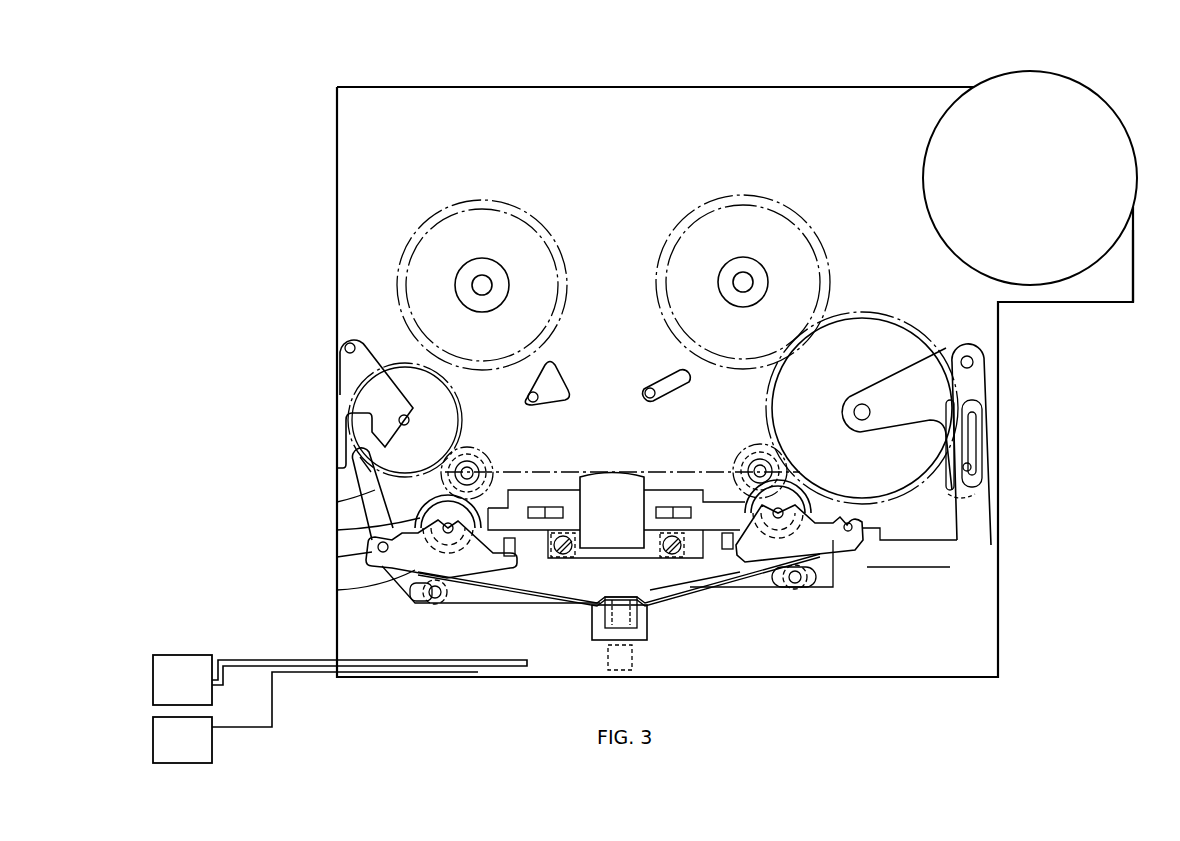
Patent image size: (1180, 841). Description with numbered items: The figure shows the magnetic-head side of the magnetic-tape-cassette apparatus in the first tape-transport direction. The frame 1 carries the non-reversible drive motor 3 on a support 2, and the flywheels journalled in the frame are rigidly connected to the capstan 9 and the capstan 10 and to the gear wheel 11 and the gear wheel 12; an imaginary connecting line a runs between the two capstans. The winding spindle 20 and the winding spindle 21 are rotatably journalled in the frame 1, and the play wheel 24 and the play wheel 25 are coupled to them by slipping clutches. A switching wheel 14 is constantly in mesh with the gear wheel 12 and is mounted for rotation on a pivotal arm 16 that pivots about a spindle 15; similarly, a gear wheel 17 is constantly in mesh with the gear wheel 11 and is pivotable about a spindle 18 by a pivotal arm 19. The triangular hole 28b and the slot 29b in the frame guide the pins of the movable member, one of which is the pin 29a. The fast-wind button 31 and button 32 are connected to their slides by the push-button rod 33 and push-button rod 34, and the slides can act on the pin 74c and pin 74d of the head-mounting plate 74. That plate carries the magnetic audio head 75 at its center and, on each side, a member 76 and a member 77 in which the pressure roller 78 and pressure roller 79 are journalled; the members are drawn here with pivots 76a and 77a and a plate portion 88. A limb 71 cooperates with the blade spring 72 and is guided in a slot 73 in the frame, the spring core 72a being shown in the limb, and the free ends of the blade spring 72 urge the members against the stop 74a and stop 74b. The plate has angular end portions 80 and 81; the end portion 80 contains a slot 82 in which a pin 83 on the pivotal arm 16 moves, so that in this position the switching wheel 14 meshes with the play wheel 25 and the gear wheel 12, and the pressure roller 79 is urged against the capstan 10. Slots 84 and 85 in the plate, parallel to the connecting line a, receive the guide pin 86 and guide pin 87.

The frame 1 is at (338, 190).
The support 2 is at (1098, 302).
The drive motor 3 is at (948, 128).
The capstan 9 is at (471, 468).
The capstan 10 is at (757, 465).
The gear wheel 11 is at (492, 468).
The gear wheel 12 is at (740, 458).
The switching wheel 14 is at (880, 315).
The spindle 15 is at (975, 362).
The pivotal arm 16 is at (892, 383).
The gear wheel 17 is at (362, 433).
The spindle 18 is at (343, 348).
The pivotal arm 19 is at (360, 400).
The winding spindle 20 is at (485, 283).
The winding spindle 21 is at (745, 282).
The play wheel 24 is at (522, 207).
The play wheel 25 is at (748, 207).
The triangular hole 28b is at (552, 372).
The pin 29a is at (528, 394).
The slot 29b is at (682, 372).
The button 31 is at (208, 750).
The button 32 is at (178, 656).
The push-button rod 33 is at (272, 710).
The push-button rod 34 is at (245, 660).
The limb 71 is at (605, 622).
The blade spring 72 is at (700, 590).
The actuator core 72a is at (640, 622).
The slot 73 is at (634, 658).
The head-mounting plate 74 is at (480, 600).
The stop 74a is at (515, 552).
The stop 74b is at (722, 548).
The pin 74c is at (574, 557).
The pin 74d is at (662, 557).
The magnetic audio head 75 is at (624, 490).
The member 76 is at (395, 572).
The pivot of pinch roller lever 76a is at (378, 548).
The member 77 is at (835, 545).
The pivot of pinch roller lever 77a is at (860, 522).
The pressure roller 78 is at (370, 522).
The pressure roller 79 is at (800, 500).
The angular end portion 80 is at (980, 510).
The angular end portion 81 is at (378, 493).
The slot 82 is at (975, 428).
The pin 83 is at (971, 467).
The slot 84 is at (422, 600).
The slot 85 is at (808, 588).
The guide pin 86 is at (438, 602).
The guide pin 87 is at (795, 588).
The head carrier plate 88 is at (678, 500).
The connecting line a is at (570, 468).